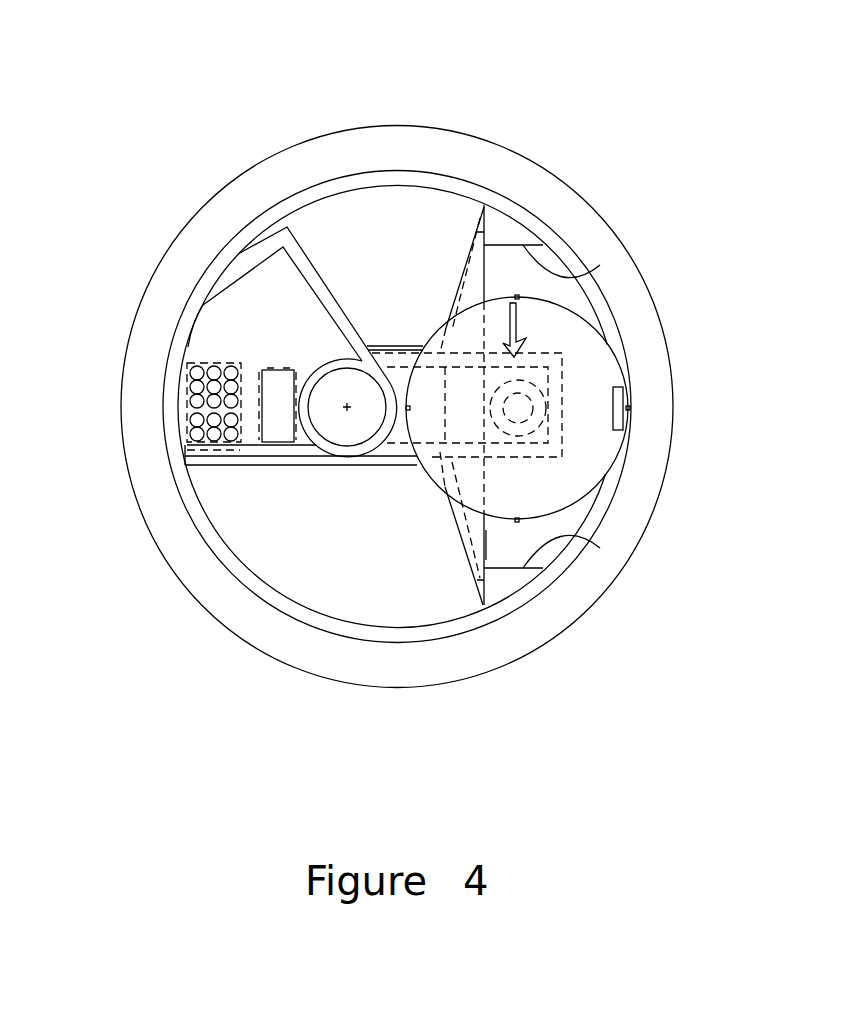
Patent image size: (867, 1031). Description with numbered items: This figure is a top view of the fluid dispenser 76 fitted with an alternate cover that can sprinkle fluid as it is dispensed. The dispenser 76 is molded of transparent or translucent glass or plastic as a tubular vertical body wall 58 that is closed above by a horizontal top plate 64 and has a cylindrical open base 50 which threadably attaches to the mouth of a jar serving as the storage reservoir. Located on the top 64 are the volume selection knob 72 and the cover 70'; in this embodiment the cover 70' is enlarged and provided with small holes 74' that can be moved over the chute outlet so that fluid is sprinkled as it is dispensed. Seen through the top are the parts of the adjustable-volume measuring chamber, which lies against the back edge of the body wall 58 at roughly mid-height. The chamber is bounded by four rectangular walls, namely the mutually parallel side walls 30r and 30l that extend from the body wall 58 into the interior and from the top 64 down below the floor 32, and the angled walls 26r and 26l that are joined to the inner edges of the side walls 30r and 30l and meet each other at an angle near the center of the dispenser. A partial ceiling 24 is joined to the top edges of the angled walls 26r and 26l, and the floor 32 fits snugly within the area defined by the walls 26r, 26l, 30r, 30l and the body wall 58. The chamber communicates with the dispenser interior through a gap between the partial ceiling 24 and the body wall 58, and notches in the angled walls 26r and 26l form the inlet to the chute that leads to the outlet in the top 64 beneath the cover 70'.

The fluid dispenser 76 is at (380, 75).
The cover 70' is at (292, 283).
The small holes 74' is at (188, 346).
The angled wall 26r is at (466, 293).
The partial ceiling 24 is at (487, 290).
The side wall 30r is at (580, 270).
The volume selection knob 72 is at (562, 304).
The top plate 64 is at (245, 502).
The side wall 30l is at (603, 525).
The body wall 58 is at (233, 580).
The floor 32 is at (512, 543).
The cylindrical open base 50 is at (295, 643).
The angled wall 26l is at (466, 527).